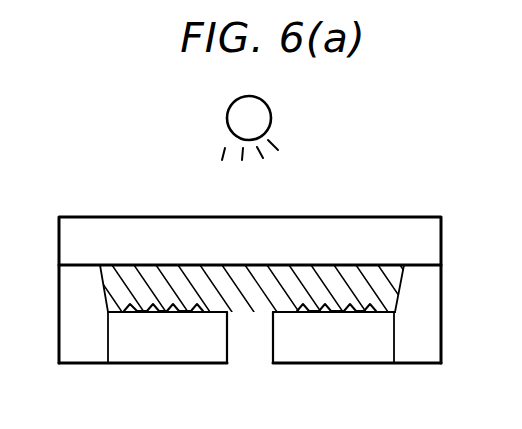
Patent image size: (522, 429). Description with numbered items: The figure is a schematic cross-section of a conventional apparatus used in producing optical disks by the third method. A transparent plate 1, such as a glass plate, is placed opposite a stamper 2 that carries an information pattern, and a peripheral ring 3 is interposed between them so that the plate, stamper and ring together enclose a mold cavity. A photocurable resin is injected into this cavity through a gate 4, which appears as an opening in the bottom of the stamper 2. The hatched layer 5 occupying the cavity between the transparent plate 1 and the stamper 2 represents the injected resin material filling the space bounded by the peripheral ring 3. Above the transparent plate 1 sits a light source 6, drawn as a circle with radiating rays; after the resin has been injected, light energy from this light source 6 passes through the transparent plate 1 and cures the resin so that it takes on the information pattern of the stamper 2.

The transparent plate 1 is at (427, 237).
The stamper 2 is at (372, 340).
The peripheral ring 3 is at (427, 315).
The gate 4 is at (250, 331).
The photosensitive layer (hatched) 5 is at (115, 290).
The light source 6 is at (258, 122).